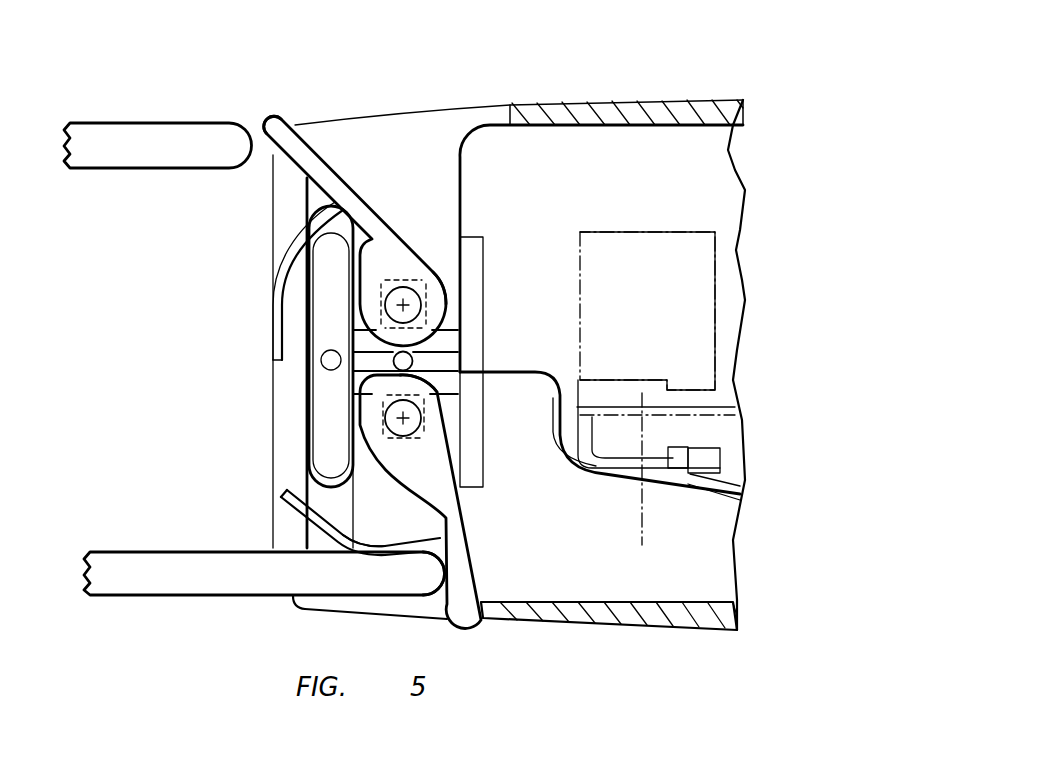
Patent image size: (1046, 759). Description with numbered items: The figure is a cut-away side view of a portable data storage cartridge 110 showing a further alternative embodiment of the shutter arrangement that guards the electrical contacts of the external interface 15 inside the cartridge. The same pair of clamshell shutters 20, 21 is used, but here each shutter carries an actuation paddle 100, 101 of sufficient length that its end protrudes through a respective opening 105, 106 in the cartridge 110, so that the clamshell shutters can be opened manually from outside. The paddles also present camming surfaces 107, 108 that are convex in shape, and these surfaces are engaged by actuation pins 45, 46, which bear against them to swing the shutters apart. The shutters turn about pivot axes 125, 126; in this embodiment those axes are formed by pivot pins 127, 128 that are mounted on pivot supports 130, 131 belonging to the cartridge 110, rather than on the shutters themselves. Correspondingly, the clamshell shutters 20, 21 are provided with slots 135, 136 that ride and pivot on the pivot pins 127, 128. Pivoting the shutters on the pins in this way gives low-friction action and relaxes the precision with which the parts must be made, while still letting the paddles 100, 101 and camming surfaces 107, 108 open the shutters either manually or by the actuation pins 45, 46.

The external interface 15 is at (318, 393).
The clamshell shutter 20 is at (287, 240).
The clamshell shutter 21 is at (284, 510).
The actuation pin 45 is at (130, 123).
The actuation pin 46 is at (138, 551).
The actuation paddle 100 is at (378, 217).
The actuation paddle 101 is at (473, 551).
The opening 105 is at (510, 106).
The opening 106 is at (507, 605).
The camming surface 107 is at (263, 132).
The camming surface 108 is at (448, 570).
The cartridge 110 is at (362, 73).
The pivot axis 125 is at (406, 296).
The pivot axis 126 is at (443, 424).
The pivot pin 127 is at (452, 345).
The pivot pin 128 is at (461, 390).
The pivot support 130 is at (462, 190).
The pivot support 131 is at (343, 518).
The slot 135 is at (386, 293).
The slot 136 is at (399, 438).